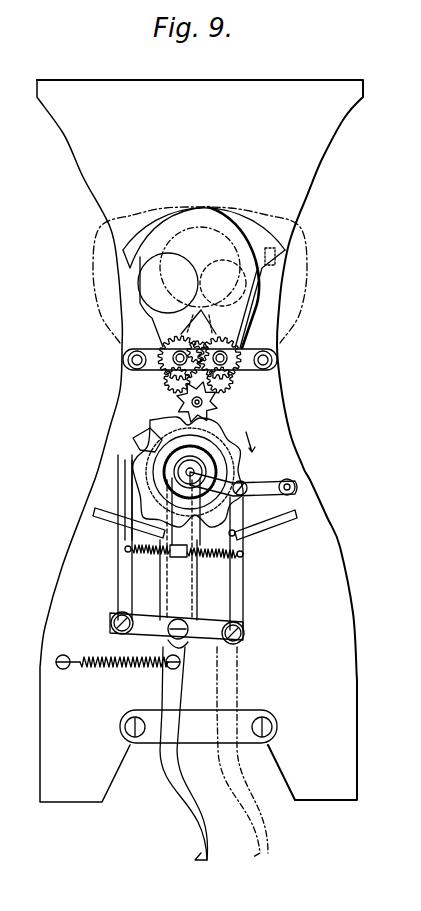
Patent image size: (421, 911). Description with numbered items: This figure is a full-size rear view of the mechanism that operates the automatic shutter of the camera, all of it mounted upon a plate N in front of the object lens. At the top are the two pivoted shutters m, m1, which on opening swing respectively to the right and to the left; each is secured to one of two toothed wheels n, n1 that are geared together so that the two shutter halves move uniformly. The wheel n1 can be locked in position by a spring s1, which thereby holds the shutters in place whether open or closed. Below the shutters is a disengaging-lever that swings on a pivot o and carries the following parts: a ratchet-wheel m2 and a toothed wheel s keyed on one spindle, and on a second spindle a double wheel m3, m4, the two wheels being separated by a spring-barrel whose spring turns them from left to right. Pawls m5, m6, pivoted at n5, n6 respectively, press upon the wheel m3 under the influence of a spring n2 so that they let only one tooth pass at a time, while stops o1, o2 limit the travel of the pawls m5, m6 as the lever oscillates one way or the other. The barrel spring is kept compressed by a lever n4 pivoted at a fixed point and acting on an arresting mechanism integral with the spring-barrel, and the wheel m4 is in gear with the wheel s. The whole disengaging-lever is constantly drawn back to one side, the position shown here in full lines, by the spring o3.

The plate N is at (200, 441).
The pivoted shutter m1 is at (200, 277).
The pivoted shutter m is at (152, 396).
The stop o1 is at (198, 323).
The spring s1 is at (260, 298).
The toothed wheel n is at (200, 366).
The toothed wheel n1 is at (198, 365).
The toothed wheel s is at (178, 402).
The ratchet-wheel m2 is at (203, 385).
The wheel m3 is at (256, 434).
The wheel m4 is at (183, 472).
The pawl m5 is at (208, 472).
The lever n4 is at (243, 484).
The pawl m6 is at (195, 520).
The spring n2 is at (184, 555).
The stop o2 is at (226, 538).
The pivot o is at (214, 669).
The pivot n5 is at (174, 550).
The pivot n6 is at (239, 574).
The spring o3 is at (118, 669).